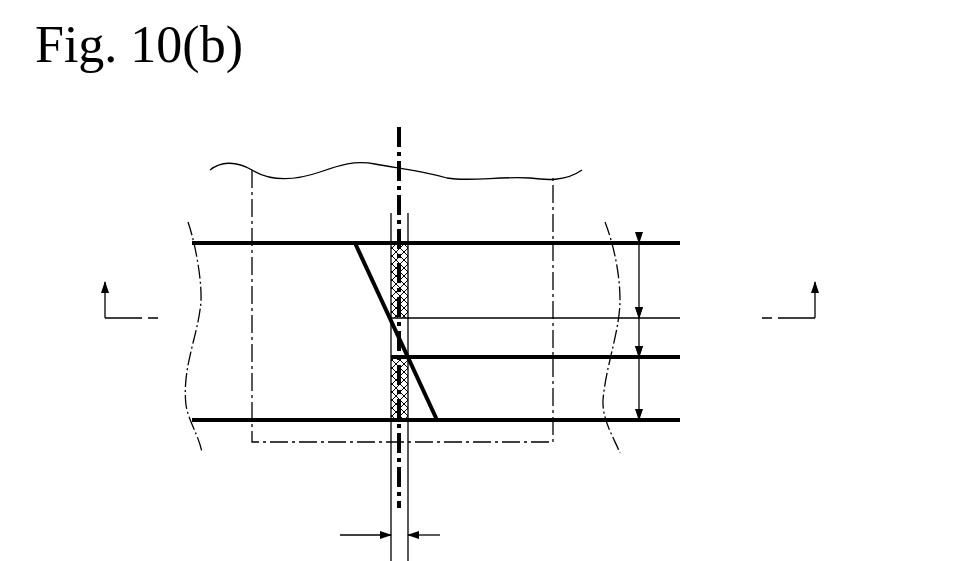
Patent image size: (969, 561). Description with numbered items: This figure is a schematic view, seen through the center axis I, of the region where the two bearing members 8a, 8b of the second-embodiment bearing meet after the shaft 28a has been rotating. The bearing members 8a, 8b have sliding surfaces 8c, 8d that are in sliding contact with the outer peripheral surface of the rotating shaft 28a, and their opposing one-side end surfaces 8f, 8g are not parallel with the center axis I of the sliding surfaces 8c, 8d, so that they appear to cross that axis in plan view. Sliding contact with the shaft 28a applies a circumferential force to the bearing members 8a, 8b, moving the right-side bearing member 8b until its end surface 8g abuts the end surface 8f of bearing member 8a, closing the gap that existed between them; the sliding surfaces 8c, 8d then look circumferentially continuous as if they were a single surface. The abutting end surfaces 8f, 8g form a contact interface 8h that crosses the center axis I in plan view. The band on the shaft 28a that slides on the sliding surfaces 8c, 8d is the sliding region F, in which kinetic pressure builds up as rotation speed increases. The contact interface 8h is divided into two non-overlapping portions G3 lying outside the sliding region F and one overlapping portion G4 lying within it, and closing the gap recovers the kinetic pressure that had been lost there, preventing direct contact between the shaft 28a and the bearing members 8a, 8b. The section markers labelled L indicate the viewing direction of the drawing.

The shaft 28a is at (275, 227).
The sliding surface 8d is at (508, 267).
The bearing member 8a is at (228, 422).
The bearing member 8b is at (593, 422).
The sliding surface 8c is at (320, 372).
The contact interface 8h is at (477, 387).
The one-side end surface 8f is at (399, 280).
The one-side end surface 8g is at (420, 378).
The center axis I is at (403, 140).
The sliding region F is at (390, 516).
The non-overlapping portion G3 is at (666, 331).
The overlapping portion G4 is at (681, 338).
The section line L is at (463, 309).